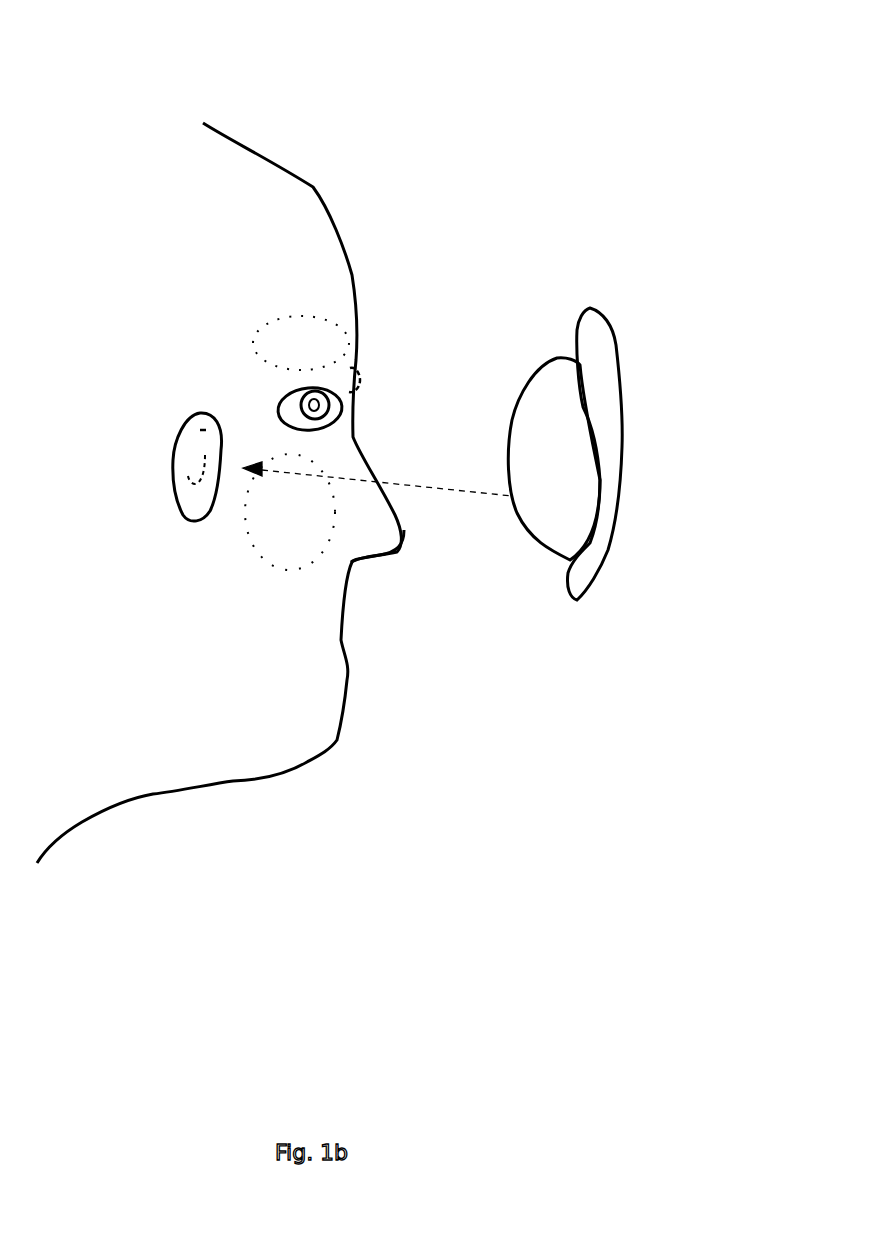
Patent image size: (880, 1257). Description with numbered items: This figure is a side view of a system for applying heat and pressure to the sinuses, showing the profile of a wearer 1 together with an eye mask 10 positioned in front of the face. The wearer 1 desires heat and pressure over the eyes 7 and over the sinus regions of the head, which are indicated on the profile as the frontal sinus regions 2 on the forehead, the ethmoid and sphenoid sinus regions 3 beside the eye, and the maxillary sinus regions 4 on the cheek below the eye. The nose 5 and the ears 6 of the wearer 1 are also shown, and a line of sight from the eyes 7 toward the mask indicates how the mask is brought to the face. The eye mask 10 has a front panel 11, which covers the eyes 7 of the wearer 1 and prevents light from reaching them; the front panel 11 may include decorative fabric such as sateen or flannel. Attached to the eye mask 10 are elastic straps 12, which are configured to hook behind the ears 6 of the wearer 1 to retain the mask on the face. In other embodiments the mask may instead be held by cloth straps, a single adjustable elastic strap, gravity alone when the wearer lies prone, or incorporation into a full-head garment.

The wearer 1 is at (96, 108).
The frontal sinus regions 2 is at (327, 320).
The ethmoid and sphenoid sinus regions 3 is at (355, 378).
The maxillary sinus regions 4 is at (320, 461).
The nose 5 is at (373, 543).
The ears 6 is at (192, 510).
The eyes 7 is at (278, 408).
The eye mask 10 is at (624, 399).
The front panel 11 is at (613, 457).
The elastic straps 12 is at (517, 513).